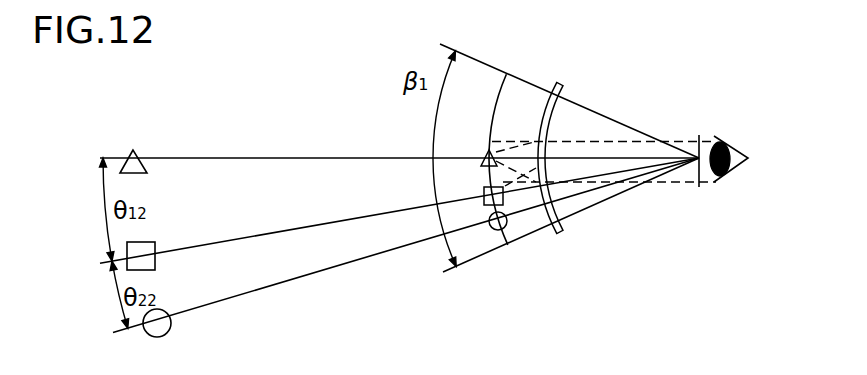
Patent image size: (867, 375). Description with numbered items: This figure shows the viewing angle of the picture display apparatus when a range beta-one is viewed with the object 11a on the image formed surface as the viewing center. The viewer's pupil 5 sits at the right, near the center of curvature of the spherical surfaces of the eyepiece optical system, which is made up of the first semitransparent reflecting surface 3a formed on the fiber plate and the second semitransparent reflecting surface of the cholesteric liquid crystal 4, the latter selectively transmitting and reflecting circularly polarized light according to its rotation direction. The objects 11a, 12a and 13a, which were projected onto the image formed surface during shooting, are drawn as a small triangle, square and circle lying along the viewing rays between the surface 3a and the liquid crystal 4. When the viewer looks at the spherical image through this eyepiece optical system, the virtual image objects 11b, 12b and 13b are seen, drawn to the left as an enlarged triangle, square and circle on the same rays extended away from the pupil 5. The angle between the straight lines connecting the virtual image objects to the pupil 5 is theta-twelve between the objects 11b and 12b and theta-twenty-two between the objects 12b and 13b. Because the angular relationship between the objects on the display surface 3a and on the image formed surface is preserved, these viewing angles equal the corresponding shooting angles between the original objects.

The first semitransparent reflecting surface 3a is at (504, 92).
The cholesteric liquid crystal 4 is at (559, 90).
The viewer's pupil 5 is at (720, 178).
The object 11a is at (487, 150).
The object 12a is at (485, 192).
The object 13a is at (497, 231).
The virtual image object 11b is at (136, 152).
The virtual image object 12b is at (147, 251).
The virtual image object 13b is at (166, 313).